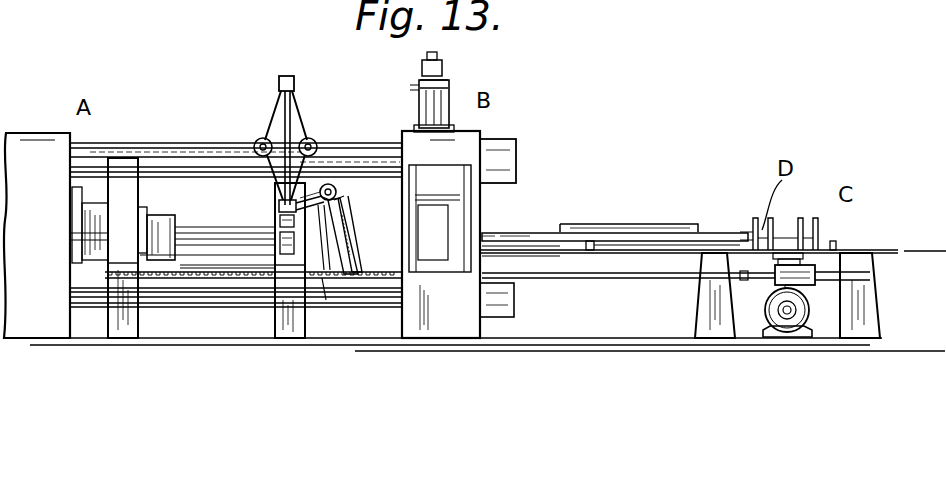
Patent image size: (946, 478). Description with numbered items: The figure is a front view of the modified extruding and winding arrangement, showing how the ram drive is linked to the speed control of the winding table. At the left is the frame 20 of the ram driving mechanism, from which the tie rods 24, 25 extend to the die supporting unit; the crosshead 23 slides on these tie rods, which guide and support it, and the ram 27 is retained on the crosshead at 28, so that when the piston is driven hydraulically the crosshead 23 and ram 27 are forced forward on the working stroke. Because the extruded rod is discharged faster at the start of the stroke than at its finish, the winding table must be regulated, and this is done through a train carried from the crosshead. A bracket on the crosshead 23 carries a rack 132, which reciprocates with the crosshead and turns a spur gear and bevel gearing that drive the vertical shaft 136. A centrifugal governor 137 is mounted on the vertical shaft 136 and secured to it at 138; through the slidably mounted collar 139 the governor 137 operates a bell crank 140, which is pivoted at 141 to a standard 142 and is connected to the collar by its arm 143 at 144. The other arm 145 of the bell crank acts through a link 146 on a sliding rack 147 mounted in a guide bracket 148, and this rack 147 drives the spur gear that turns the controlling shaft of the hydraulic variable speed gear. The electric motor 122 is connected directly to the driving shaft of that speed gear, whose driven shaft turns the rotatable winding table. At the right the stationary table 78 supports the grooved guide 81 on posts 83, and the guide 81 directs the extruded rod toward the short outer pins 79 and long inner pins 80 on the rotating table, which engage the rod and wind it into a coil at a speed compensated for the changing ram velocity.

The frame 20 is at (47, 146).
The crosshead 23 is at (124, 160).
The tie rod 24 is at (188, 152).
The tie rod 25 is at (255, 292).
The ram 27 is at (208, 238).
The ram retaining facilities 28 is at (163, 222).
The stationary table 78 is at (880, 249).
The short outer pins 79 is at (834, 242).
The long inner pins 80 is at (816, 225).
The guide 81 is at (526, 233).
The posts 83 is at (590, 250).
The electric motor 122 is at (763, 316).
The rack 132 is at (203, 282).
The vertical shaft 136 is at (285, 240).
The centrifugal governor 137 is at (259, 124).
The governor securing point 138 is at (290, 82).
The collar 139 is at (282, 206).
The bell crank 140 is at (344, 205).
The pivot 141 is at (329, 184).
The standard 142 is at (280, 250).
The arm 143 is at (325, 282).
The connection point 144 is at (280, 203).
The other arm 145 is at (352, 250).
The link 146 is at (586, 281).
The sliding rack 147 is at (830, 279).
The guide bracket 148 is at (812, 272).